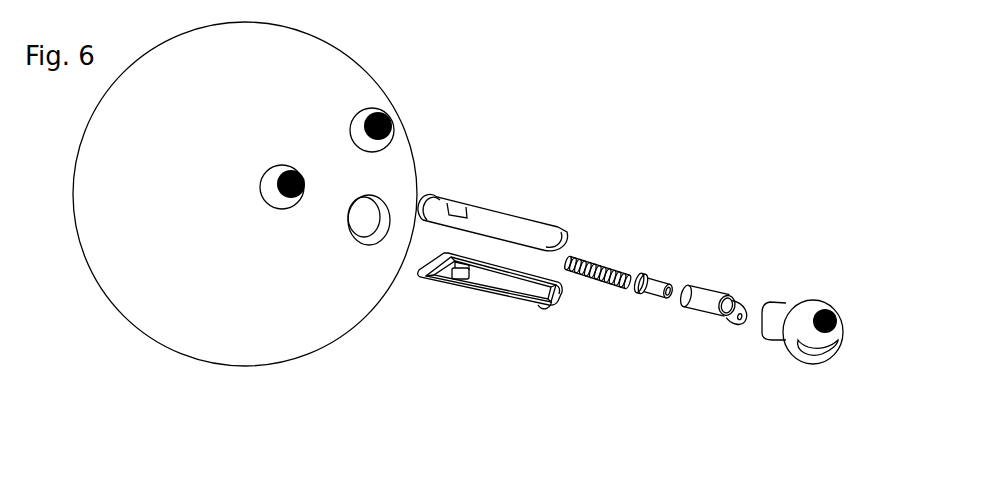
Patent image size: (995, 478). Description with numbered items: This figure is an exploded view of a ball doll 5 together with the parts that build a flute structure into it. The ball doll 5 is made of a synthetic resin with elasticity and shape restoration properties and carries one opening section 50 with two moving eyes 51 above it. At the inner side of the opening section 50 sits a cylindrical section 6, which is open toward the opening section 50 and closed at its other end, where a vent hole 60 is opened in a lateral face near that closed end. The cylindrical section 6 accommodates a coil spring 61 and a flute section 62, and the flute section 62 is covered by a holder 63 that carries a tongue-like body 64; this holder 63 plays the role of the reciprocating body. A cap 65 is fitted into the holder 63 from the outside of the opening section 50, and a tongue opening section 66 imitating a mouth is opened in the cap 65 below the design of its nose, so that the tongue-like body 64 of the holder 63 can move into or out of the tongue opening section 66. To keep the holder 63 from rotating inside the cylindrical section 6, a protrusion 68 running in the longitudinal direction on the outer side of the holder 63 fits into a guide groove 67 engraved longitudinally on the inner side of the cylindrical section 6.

The ball doll 5 is at (240, 333).
The opening section 50 is at (390, 202).
The moving eyes 51 is at (397, 117).
The cylindrical section 6 is at (502, 228).
The vent hole 60 is at (463, 290).
The coil spring 61 is at (613, 290).
The flute section 62 is at (655, 278).
The holder 63 is at (692, 312).
The tongue-like body 64 is at (742, 298).
The cap 65 is at (812, 299).
The tongue opening section 66 is at (807, 355).
The guide groove 67 is at (548, 308).
The protrusion 68 is at (722, 317).